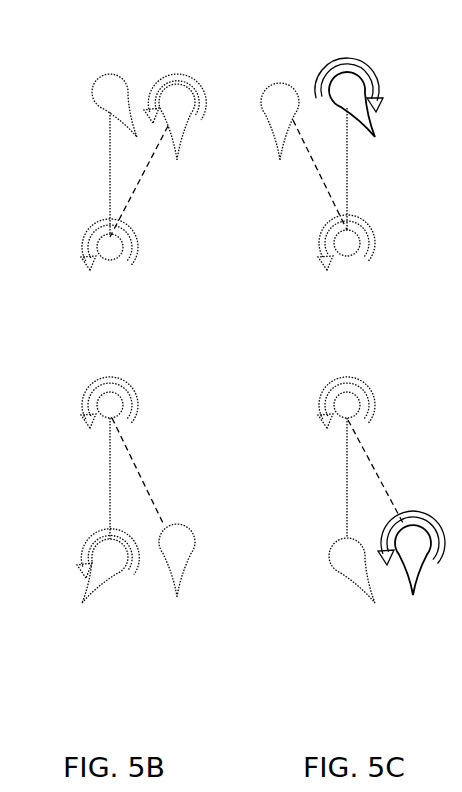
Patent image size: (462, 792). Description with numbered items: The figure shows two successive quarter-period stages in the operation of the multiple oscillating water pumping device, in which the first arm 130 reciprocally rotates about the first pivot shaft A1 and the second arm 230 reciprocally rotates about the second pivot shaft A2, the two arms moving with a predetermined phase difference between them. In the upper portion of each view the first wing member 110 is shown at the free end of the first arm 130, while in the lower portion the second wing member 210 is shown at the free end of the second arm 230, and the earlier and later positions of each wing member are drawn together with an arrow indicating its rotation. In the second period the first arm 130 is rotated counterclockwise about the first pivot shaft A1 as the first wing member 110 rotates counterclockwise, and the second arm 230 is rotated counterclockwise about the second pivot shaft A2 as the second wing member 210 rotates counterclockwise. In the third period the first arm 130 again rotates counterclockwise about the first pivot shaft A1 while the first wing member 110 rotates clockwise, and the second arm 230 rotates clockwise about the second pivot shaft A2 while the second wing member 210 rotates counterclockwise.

In FIG. 5B, the first wing member 110 is at (118, 80).
In FIG. 5C, the first wing member 110 is at (267, 87).
In FIG. 5B, the first arm 130 is at (110, 165).
In FIG. 5C, the first arm 130 is at (313, 178).
In FIG. 5B, the second wing member 210 is at (197, 543).
In FIG. 5C, the second wing member 210 is at (350, 580).
In FIG. 5B, the second arm 230 is at (150, 478).
In FIG. 5C, the second arm 230 is at (347, 485).
In FIG. 5B, the first pivot shaft A1 is at (103, 258).
In FIG. 5C, the first pivot shaft A1 is at (340, 260).
In FIG. 5B, the second pivot shaft A2 is at (122, 377).
In FIG. 5C, the second pivot shaft A2 is at (358, 380).